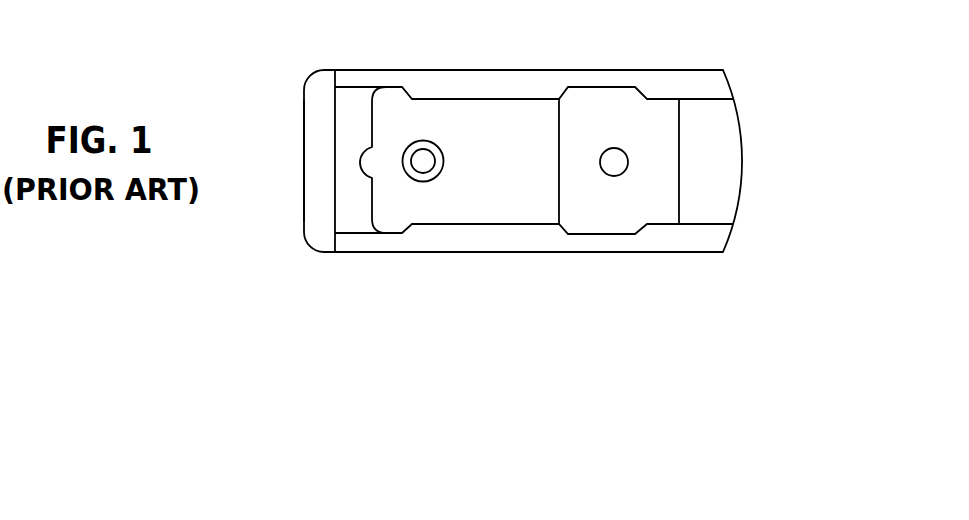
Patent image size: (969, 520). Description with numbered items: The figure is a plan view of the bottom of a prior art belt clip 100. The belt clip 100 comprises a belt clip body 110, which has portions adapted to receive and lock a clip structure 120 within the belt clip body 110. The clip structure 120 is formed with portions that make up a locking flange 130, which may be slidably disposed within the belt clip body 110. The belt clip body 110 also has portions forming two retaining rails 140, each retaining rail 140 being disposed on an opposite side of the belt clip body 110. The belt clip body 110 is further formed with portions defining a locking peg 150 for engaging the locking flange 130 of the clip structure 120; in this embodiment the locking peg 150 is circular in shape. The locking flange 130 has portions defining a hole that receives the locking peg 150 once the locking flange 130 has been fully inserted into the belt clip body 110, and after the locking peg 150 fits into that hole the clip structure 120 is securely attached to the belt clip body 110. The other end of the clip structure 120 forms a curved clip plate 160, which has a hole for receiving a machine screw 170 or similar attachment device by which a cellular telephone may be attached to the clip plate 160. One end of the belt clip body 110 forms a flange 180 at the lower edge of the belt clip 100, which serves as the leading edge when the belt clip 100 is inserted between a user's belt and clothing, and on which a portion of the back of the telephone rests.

The belt clip 100 is at (766, 49).
The belt clip body 110 is at (723, 253).
The clip structure 120 is at (610, 103).
The locking flange 130 is at (392, 100).
The retaining rails 140 is at (485, 78).
The locking peg 150 is at (424, 165).
The clip plate 160 is at (615, 215).
The machine screw 170 is at (628, 160).
The flange 180 is at (320, 155).